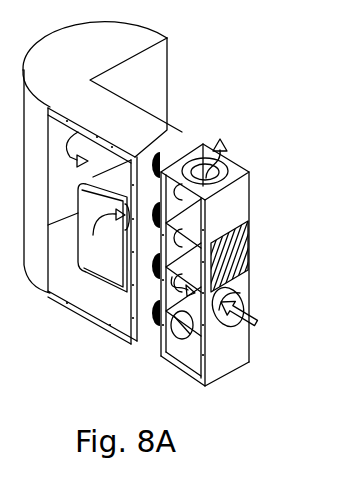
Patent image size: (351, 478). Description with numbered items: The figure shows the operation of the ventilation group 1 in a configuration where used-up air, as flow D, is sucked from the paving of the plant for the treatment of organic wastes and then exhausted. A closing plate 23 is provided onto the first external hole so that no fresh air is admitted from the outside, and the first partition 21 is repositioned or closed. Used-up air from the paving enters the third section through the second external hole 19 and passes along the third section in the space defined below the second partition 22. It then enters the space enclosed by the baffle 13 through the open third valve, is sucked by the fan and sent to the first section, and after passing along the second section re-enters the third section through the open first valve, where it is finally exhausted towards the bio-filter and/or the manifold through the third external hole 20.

The beverage dispensing apparatus 1 is at (250, 386).
The baffle 13 is at (110, 253).
The second external hole 19 is at (243, 285).
The third external hole 20 is at (192, 158).
The first partition 21 is at (182, 215).
The second partition 22 is at (185, 263).
The closing plate 23 is at (250, 247).